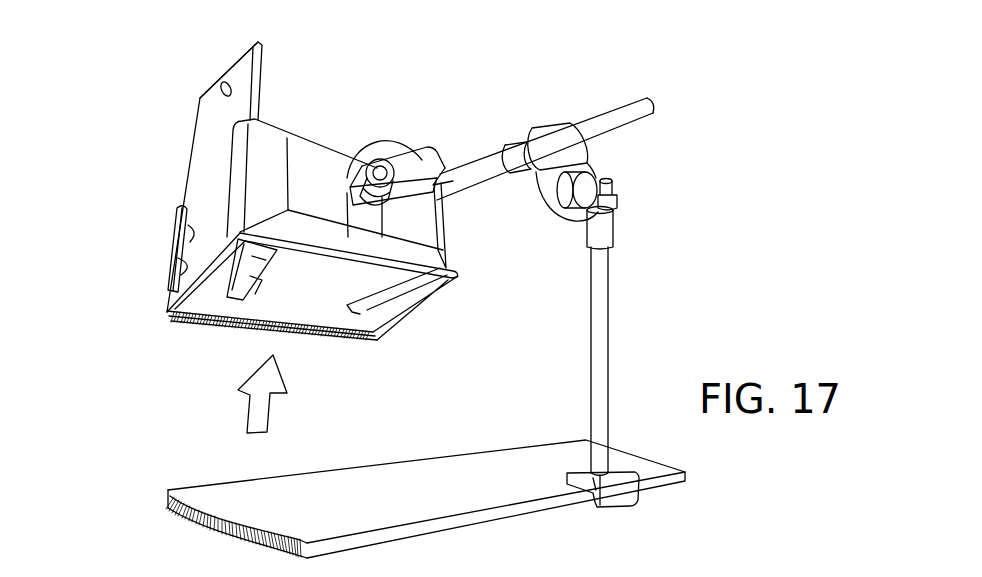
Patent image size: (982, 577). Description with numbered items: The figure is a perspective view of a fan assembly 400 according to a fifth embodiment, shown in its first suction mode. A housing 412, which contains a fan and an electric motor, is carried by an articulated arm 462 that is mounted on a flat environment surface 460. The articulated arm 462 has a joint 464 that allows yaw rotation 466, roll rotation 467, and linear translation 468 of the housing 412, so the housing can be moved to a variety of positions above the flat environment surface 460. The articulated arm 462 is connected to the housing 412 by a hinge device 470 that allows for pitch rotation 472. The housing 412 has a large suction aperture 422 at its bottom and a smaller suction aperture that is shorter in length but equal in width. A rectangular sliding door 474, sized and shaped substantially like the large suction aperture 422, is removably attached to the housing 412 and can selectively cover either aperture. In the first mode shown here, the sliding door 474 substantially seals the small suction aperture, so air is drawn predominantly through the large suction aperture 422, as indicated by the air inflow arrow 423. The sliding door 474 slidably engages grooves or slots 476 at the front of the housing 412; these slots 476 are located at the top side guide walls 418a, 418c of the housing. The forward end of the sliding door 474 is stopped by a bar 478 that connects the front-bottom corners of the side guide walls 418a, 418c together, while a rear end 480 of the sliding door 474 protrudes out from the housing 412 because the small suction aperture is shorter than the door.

The fan assembly 400 is at (146, 70).
The housing 412 is at (332, 175).
The side guide wall 418a is at (262, 166).
The side guide wall 418c is at (139, 294).
The large suction aperture 422 is at (313, 363).
The air inflow arrow 423 is at (250, 437).
The flat environment surface 460 is at (497, 520).
The articulated arm 462 is at (661, 127).
The joint 464 is at (594, 175).
The yaw rotation 466 is at (570, 315).
The roll rotation 467 is at (497, 187).
The linear translation 468 is at (523, 124).
The hinge device 470 is at (392, 214).
The pitch rotation 472 is at (406, 168).
The sliding door 474 is at (195, 152).
The slots 476 is at (184, 228).
The bar 478 is at (170, 268).
The rear end 480 is at (243, 58).